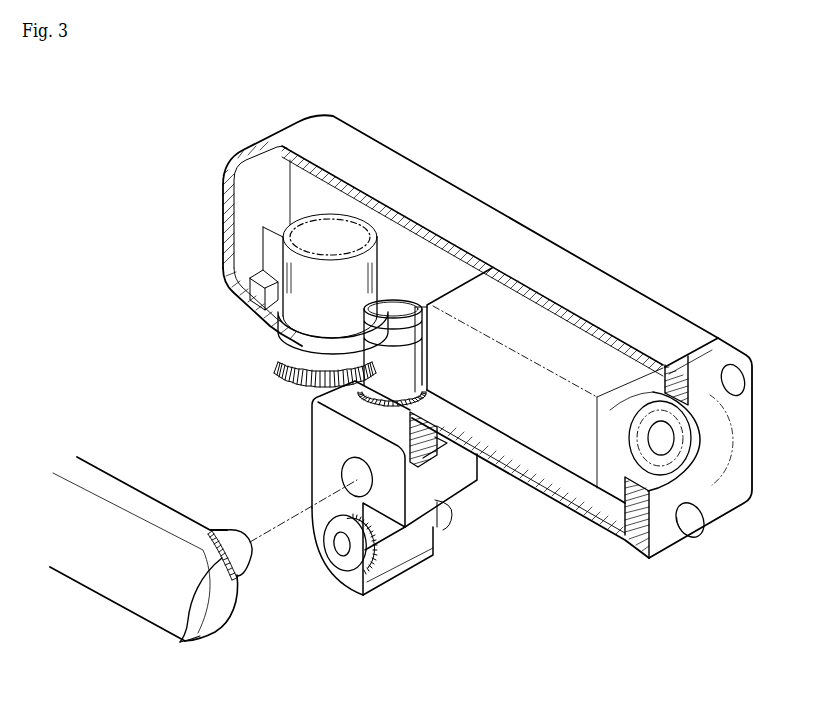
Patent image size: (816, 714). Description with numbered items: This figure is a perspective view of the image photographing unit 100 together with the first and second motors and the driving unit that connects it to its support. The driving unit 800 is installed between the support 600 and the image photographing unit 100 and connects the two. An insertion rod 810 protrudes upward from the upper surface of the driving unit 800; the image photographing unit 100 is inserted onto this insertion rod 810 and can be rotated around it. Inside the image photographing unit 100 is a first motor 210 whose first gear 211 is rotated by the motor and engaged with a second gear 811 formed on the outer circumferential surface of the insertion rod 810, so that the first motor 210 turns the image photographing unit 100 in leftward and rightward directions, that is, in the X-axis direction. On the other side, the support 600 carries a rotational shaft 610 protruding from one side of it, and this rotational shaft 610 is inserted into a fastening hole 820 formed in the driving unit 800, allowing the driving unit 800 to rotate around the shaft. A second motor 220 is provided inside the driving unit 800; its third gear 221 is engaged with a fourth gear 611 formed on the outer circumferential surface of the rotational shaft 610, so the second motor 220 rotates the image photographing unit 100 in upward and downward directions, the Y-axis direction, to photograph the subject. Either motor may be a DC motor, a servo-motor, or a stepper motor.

The image photographing unit 100 is at (592, 216).
The first motor 210 is at (333, 227).
The first gear 211 is at (300, 355).
The insertion rod 810 is at (380, 366).
The second gear 811 is at (370, 388).
The driving unit 800 is at (450, 586).
The second motor 220 is at (410, 537).
The third gear 221 is at (350, 562).
The fastening hole 820 is at (355, 486).
The support 600 is at (100, 574).
The rotational shaft 610 is at (228, 540).
The fourth gear 611 is at (181, 641).